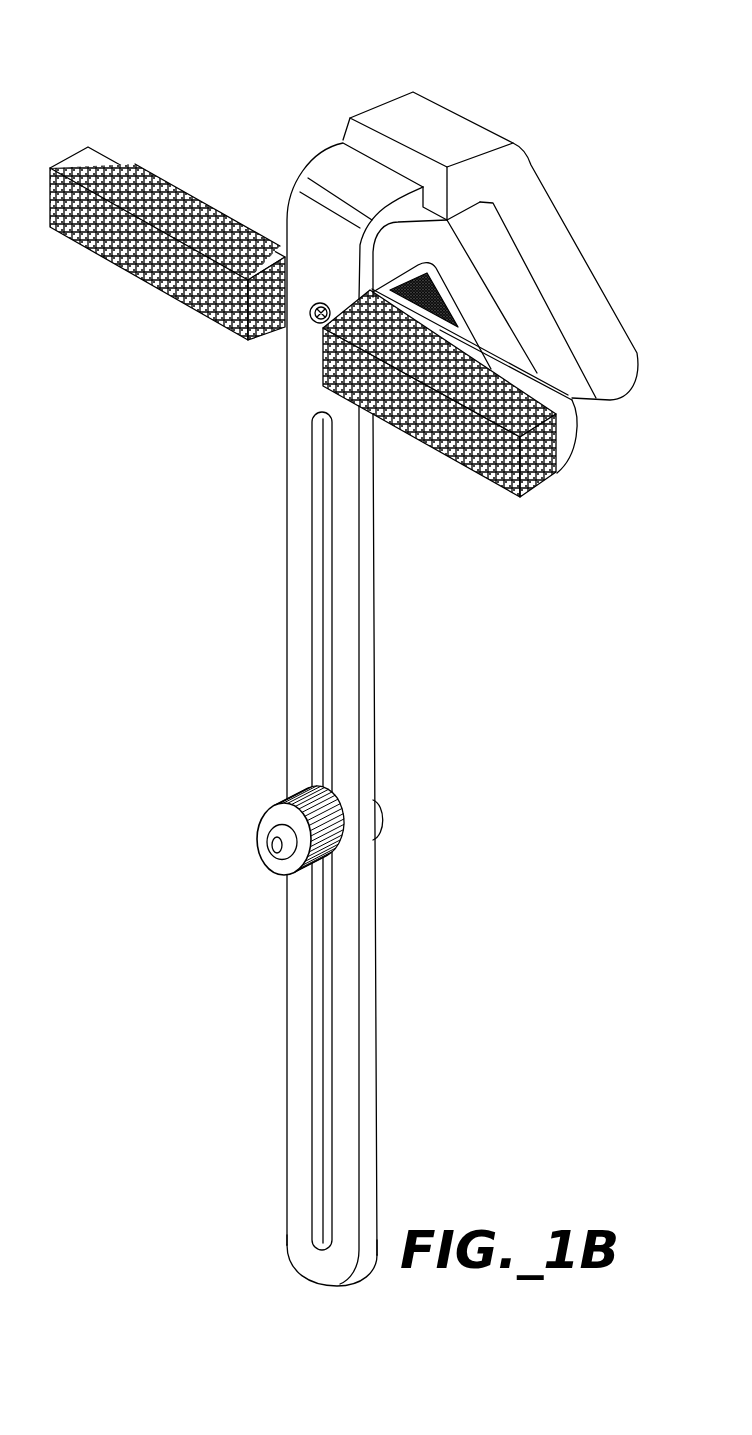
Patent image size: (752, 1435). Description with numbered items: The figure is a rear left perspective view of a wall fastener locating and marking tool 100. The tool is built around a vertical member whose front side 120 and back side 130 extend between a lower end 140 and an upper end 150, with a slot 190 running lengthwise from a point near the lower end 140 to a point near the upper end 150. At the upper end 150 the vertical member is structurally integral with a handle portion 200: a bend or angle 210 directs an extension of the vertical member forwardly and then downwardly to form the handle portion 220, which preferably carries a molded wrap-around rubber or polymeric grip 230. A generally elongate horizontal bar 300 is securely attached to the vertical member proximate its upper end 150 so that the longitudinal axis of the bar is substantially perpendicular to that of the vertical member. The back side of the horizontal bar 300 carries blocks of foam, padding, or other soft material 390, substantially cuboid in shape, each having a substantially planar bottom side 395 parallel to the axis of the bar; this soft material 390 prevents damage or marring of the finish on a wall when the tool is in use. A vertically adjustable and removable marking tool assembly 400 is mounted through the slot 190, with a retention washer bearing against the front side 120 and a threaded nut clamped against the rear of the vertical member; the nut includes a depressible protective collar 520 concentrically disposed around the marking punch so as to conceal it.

The wall fastener locating and marking tool 100 is at (290, 100).
The front side 120 is at (455, 1113).
The back side 130 is at (295, 548).
The lower end 140 is at (296, 1278).
The upper end 150 is at (258, 378).
The slot 190 is at (312, 692).
The handle portion 200 is at (507, 108).
The bend or angle 210 is at (312, 228).
The handle portion 220 is at (543, 185).
The grip 230 is at (358, 130).
The horizontal bar 300 is at (128, 150).
The soft material 390 is at (147, 268).
The bottom side 395 is at (474, 480).
The marking tool assembly 400 is at (238, 805).
The depressible protective collar 520 is at (285, 866).